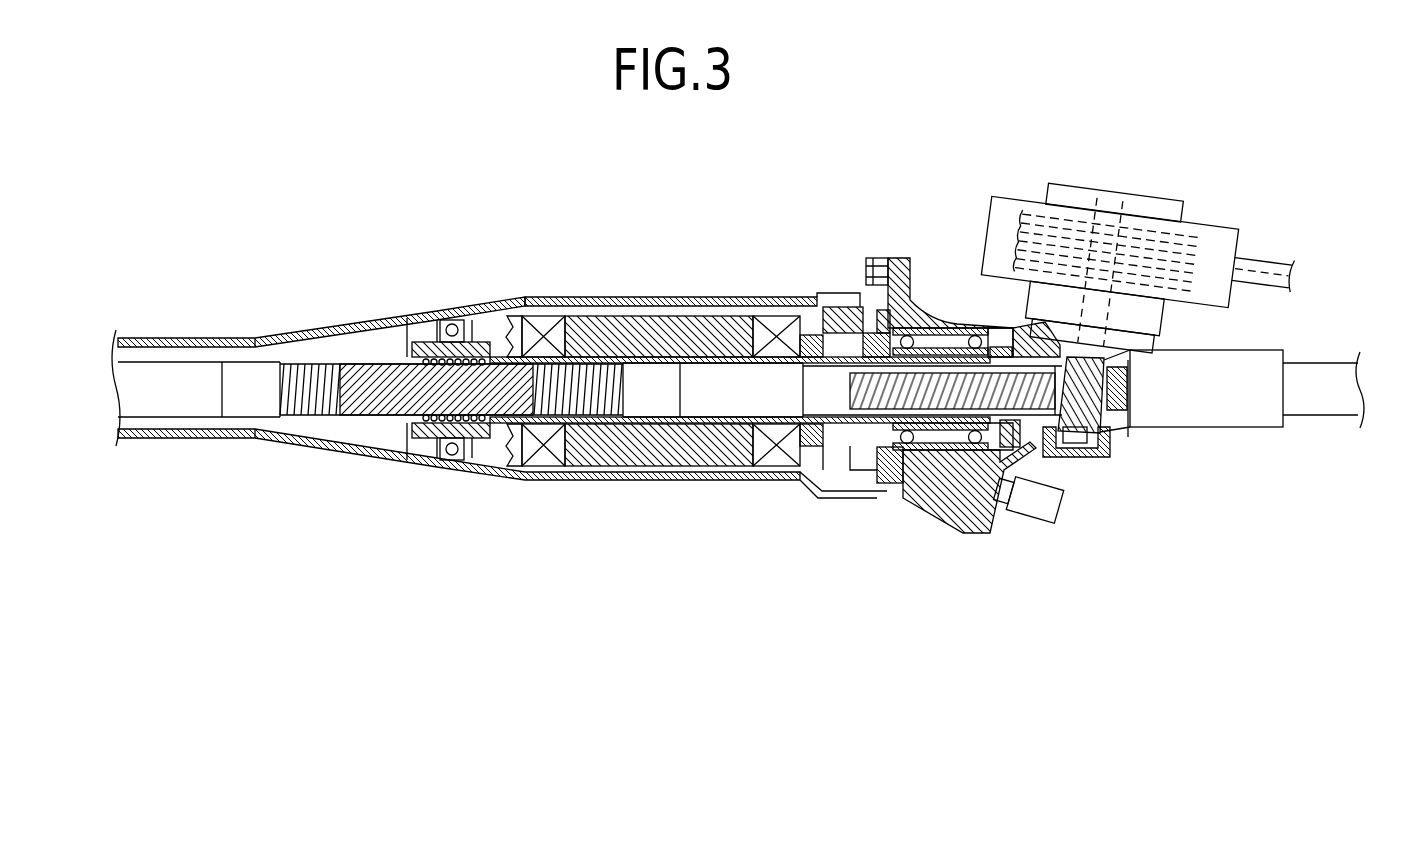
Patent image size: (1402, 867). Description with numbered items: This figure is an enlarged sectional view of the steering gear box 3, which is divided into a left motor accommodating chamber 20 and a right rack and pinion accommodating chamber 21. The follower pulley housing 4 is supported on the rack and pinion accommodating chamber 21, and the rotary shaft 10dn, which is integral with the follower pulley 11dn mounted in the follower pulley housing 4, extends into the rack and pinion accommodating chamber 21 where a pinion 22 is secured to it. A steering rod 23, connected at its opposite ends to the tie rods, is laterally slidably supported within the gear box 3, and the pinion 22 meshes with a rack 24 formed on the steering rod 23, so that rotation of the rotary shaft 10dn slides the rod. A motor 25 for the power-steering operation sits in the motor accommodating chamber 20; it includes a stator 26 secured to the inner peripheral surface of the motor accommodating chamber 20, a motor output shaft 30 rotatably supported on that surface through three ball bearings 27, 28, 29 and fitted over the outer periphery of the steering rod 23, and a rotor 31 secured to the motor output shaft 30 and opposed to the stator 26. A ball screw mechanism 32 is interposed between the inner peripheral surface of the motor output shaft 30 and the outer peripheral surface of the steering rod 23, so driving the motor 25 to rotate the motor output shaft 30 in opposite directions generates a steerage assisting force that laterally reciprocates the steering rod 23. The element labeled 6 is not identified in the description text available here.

The gear box 3 is at (903, 203).
The follower pulley housing 4 is at (1018, 197).
The motor output shaft (gear) 6 is at (1264, 250).
The rotary shaft 10dn is at (1125, 222).
The follower pulley 11dn is at (1168, 240).
The motor accommodating chamber 20 is at (773, 287).
The rack and pinion accommodating chamber 21 is at (932, 290).
The pinion 22 is at (1110, 432).
The steering rod 23 is at (340, 353).
The rack 24 is at (1040, 398).
The motor 25 is at (781, 497).
The stator 26 is at (628, 482).
The ball bearing 27 is at (450, 465).
The ball bearing 28 is at (902, 500).
The ball bearing 29 is at (963, 495).
The motor output shaft 30 is at (724, 363).
The rotor 31 is at (653, 338).
The ball screw mechanism 32 is at (388, 432).